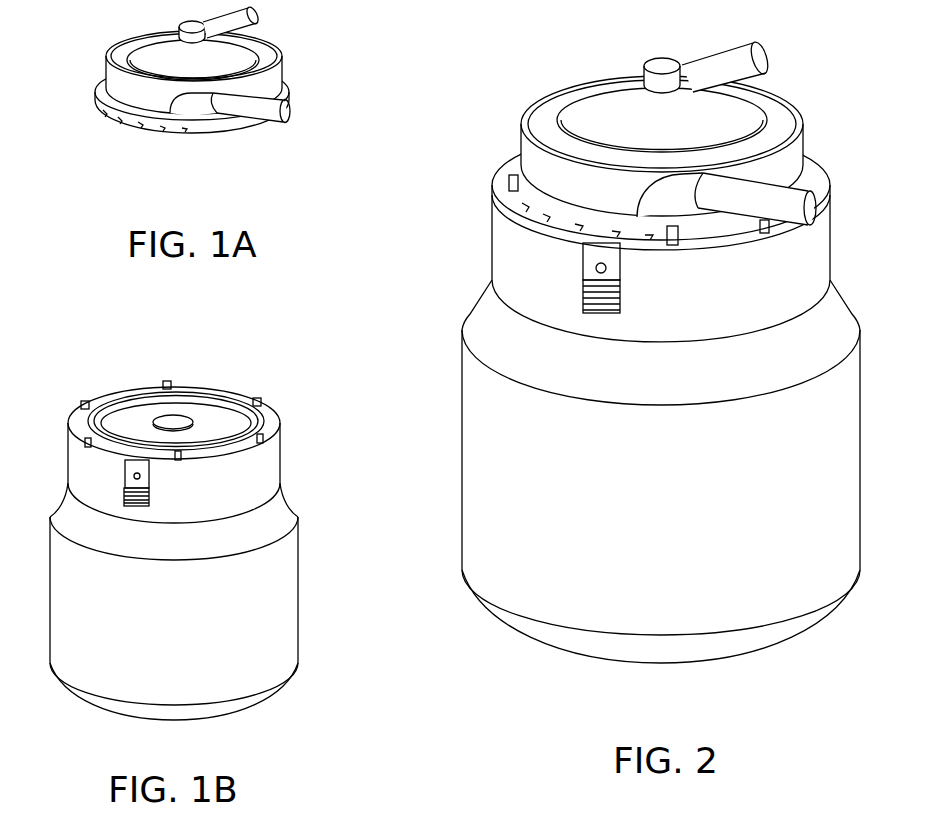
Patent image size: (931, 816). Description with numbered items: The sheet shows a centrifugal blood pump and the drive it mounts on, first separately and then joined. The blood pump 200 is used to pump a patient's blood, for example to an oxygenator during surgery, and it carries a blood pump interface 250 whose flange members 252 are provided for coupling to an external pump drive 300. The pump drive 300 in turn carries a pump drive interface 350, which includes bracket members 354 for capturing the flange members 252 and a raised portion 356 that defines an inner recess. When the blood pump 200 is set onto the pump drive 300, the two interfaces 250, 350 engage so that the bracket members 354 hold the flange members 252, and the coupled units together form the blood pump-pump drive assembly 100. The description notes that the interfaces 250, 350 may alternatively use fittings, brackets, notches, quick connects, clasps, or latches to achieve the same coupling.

In FIG. 2, the blood pump-pump drive assembly 100 is at (597, 351).
In FIG. 1A, the blood pump 200 is at (300, 118).
In FIG. 2, the blood pump 200 is at (515, 130).
In FIG. 1A, the blood pump interface 250 is at (170, 133).
In FIG. 1A, the flange members 252 is at (183, 129).
In FIG. 1B, the pump drive 300 is at (217, 514).
In FIG. 2, the pump drive 300 is at (458, 446).
In FIG. 1B, the pump drive interface 350 is at (211, 416).
In FIG. 1B, the bracket members 354 is at (166, 383).
In FIG. 1B, the raised portion 356 is at (194, 406).